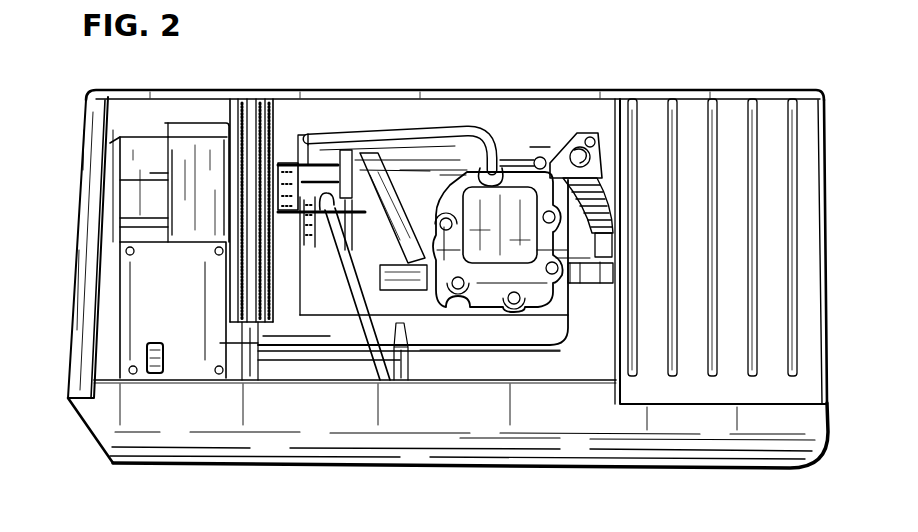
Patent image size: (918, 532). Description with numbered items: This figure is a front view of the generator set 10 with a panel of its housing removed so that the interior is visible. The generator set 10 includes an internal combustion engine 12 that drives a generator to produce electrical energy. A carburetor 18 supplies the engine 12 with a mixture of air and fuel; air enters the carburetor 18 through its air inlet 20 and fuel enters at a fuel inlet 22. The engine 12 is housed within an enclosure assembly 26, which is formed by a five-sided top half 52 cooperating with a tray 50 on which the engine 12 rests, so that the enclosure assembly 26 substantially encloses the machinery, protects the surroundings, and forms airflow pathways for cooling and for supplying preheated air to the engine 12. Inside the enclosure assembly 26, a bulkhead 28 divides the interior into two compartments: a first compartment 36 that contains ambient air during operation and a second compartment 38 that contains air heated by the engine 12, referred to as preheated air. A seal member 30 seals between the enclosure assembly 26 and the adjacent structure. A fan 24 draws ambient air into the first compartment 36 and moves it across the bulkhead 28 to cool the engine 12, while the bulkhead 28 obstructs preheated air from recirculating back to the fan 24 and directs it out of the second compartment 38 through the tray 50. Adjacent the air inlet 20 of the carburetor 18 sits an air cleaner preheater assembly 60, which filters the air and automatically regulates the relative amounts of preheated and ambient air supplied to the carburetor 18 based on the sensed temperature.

The generator set 10 is at (229, 83).
The internal combustion engine 12 is at (556, 352).
The carburetor 18 is at (325, 158).
The air inlet 20 is at (285, 153).
The fuel inlet 22 is at (341, 284).
The fan 24 is at (133, 197).
The enclosure assembly 26 is at (731, 94).
The bulkhead 28 is at (234, 344).
The seal member 30 is at (254, 98).
The first compartment 36 is at (122, 110).
The second compartment 38 is at (540, 130).
The tray 50 is at (450, 457).
The top half 52 is at (824, 196).
The air cleaner preheater assembly 60 is at (190, 122).